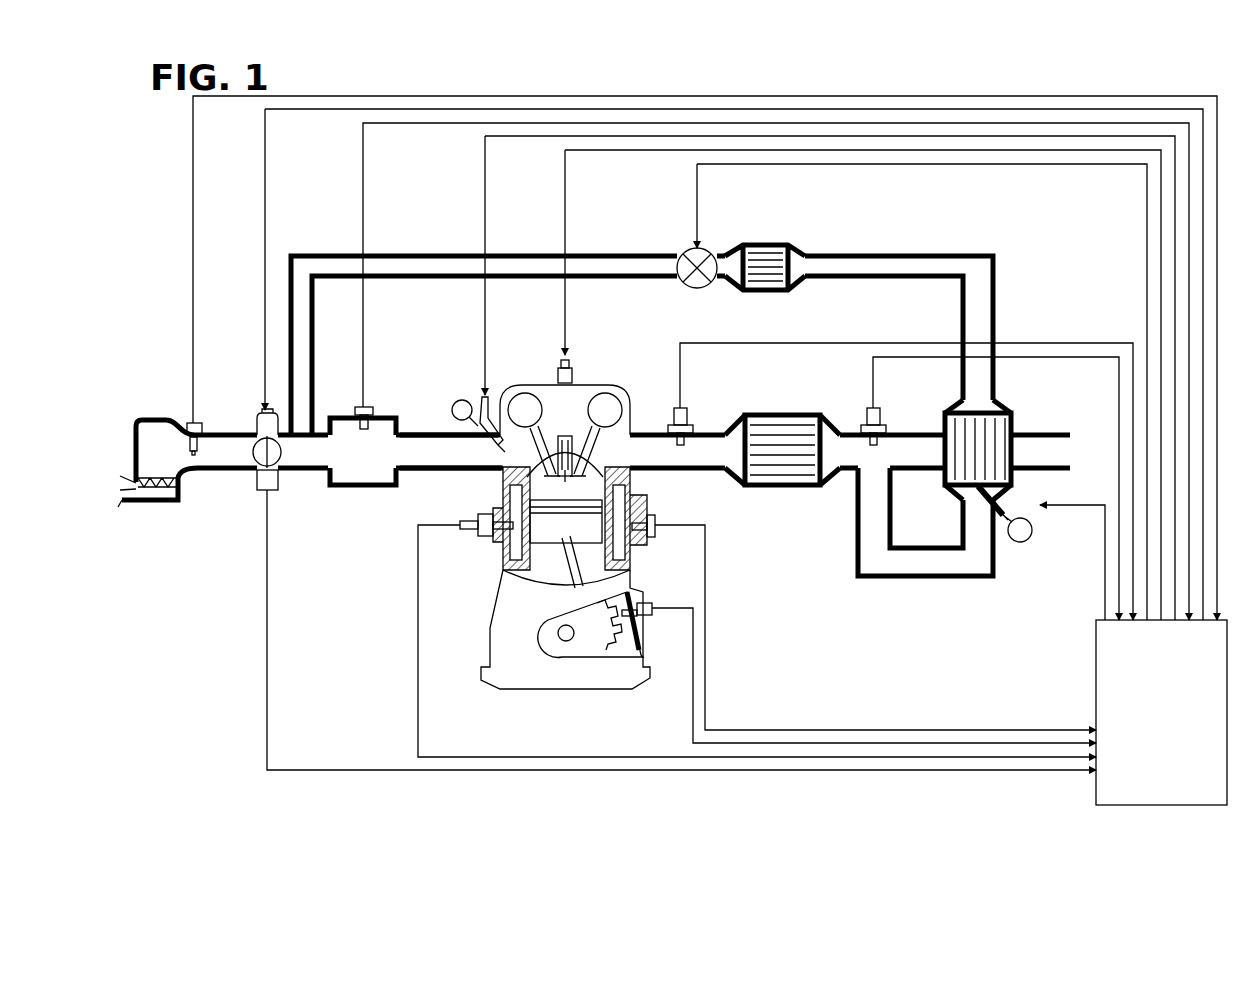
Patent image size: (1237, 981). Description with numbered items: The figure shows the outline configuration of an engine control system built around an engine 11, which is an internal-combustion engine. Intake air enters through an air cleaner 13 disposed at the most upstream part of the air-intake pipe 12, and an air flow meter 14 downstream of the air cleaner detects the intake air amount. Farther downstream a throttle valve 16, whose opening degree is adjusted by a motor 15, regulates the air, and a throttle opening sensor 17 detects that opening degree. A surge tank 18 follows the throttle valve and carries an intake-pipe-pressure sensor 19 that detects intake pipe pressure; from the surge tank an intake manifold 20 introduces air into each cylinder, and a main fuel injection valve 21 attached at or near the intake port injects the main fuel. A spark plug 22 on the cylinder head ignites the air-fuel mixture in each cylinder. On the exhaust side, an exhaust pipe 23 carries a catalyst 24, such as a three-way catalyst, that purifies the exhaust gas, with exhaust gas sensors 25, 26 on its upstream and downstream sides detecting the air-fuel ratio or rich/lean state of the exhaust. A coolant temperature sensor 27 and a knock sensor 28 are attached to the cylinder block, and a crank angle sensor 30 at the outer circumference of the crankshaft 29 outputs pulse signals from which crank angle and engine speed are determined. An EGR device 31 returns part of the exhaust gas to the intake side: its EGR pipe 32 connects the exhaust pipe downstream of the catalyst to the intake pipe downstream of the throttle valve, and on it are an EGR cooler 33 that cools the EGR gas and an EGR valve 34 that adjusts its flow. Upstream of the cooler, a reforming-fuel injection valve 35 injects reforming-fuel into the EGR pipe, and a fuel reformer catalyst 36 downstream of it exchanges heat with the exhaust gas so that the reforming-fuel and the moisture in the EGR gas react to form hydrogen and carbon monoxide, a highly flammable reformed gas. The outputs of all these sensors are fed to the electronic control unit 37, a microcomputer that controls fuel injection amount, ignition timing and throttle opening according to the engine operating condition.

The engine 11 is at (615, 375).
The air-intake pipe 12 is at (224, 432).
The air cleaner 13 is at (150, 500).
The air flow meter 14 is at (185, 420).
The motor 15 is at (258, 412).
The throttle valve 16 is at (253, 455).
The throttle opening sensor 17 is at (280, 491).
The surge tank 18 is at (363, 488).
The intake-pipe-pressure sensor 19 is at (357, 406).
The intake manifold 20 is at (430, 433).
The main fuel injection valve 21 is at (490, 396).
The spark plug 22 is at (570, 393).
The exhaust pipe 23 is at (680, 472).
The catalyst 24 is at (786, 490).
The exhaust gas sensor 25 is at (688, 415).
The exhaust gas sensor 26 is at (865, 415).
The coolant temperature sensor 27 is at (482, 538).
The knock sensor 28 is at (653, 538).
The crankshaft 29 is at (566, 641).
The crank angle sensor 30 is at (648, 615).
The EGR device 31 is at (929, 251).
The EGR pipe 32 is at (433, 254).
The EGR cooler 33 is at (768, 243).
The EGR valve 34 is at (685, 247).
The reforming-fuel injection valve 35 is at (995, 516).
The fuel reformer catalyst 36 is at (1013, 445).
The electronic control unit 37 is at (1096, 672).